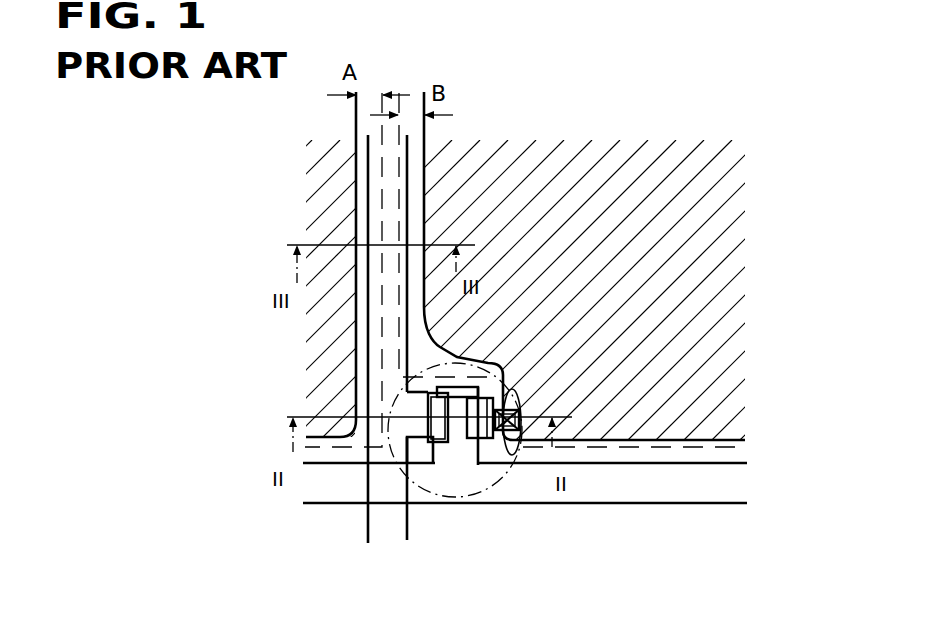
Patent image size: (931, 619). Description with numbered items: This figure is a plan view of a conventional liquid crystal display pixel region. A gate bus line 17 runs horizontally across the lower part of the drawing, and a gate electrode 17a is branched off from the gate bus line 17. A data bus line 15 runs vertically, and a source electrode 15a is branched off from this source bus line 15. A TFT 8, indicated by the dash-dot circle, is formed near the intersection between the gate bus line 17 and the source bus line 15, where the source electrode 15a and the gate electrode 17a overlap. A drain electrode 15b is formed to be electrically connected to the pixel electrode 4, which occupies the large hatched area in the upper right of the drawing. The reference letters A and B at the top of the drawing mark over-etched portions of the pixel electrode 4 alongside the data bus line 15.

The pixel electrode 4 is at (723, 274).
The TFT 8 is at (483, 488).
The data bus line 15 is at (387, 527).
The source electrode 15a is at (420, 408).
The drain electrode 15b is at (504, 445).
The gate bus line 17 is at (643, 487).
The gate electrode 17a is at (455, 452).